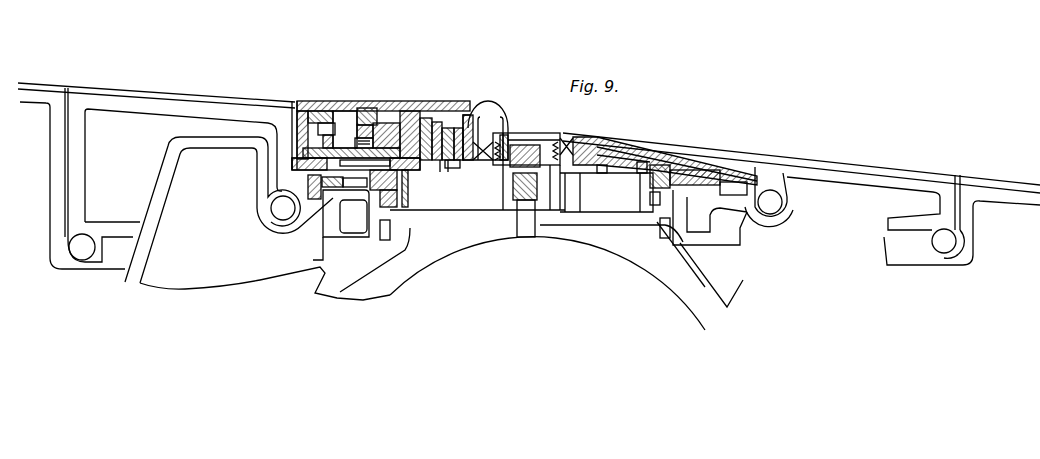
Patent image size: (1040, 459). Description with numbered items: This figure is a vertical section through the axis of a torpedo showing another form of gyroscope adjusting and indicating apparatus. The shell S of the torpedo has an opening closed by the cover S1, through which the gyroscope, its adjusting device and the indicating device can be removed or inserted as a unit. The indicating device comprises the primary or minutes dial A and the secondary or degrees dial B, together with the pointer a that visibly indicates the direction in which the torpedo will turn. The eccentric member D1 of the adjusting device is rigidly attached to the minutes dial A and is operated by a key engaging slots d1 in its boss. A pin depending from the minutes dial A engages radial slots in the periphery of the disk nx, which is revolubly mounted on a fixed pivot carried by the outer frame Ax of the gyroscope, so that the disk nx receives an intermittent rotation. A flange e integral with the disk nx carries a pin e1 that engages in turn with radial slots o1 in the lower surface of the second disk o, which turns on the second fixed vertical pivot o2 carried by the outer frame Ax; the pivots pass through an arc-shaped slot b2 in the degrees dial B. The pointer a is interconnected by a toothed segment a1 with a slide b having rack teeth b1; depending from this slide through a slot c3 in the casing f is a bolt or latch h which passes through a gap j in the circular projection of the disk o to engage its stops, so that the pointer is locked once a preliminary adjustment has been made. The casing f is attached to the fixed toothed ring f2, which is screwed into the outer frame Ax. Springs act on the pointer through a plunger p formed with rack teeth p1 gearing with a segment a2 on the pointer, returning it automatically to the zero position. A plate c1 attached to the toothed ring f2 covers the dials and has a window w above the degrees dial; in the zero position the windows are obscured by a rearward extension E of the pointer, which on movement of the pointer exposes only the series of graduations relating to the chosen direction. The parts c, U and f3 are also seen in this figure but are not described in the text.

The shell S is at (68, 86).
The cover S1 is at (878, 185).
The outer frame Ax is at (280, 217).
The second disk o is at (333, 101).
The radial slots o1 is at (297, 104).
The casing f is at (298, 104).
The second fixed vertical pivot o2 is at (318, 102).
The pin e1 is at (360, 104).
The slot c3 is at (365, 110).
The collar c is at (372, 110).
The slide b is at (380, 113).
The rack teeth b1 is at (398, 113).
The toothed segment a1 is at (415, 113).
The gap j is at (430, 113).
The pointer a is at (445, 113).
The bolt or latch h is at (460, 113).
The plunger p is at (472, 113).
The rack teeth p1 is at (485, 113).
The flange e is at (330, 155).
The disk nx is at (330, 200).
The slot b2 is at (355, 186).
The fixed toothed ring f2 is at (398, 215).
The slots d1 is at (563, 134).
The segment a2 is at (480, 130).
The plate c1 is at (612, 143).
The plate U is at (603, 157).
The minutes dial A is at (620, 162).
The rearward extension E is at (647, 165).
The degrees dial B is at (725, 178).
The window w is at (776, 190).
The eccentric member D1 is at (482, 205).
The post f3 is at (673, 218).